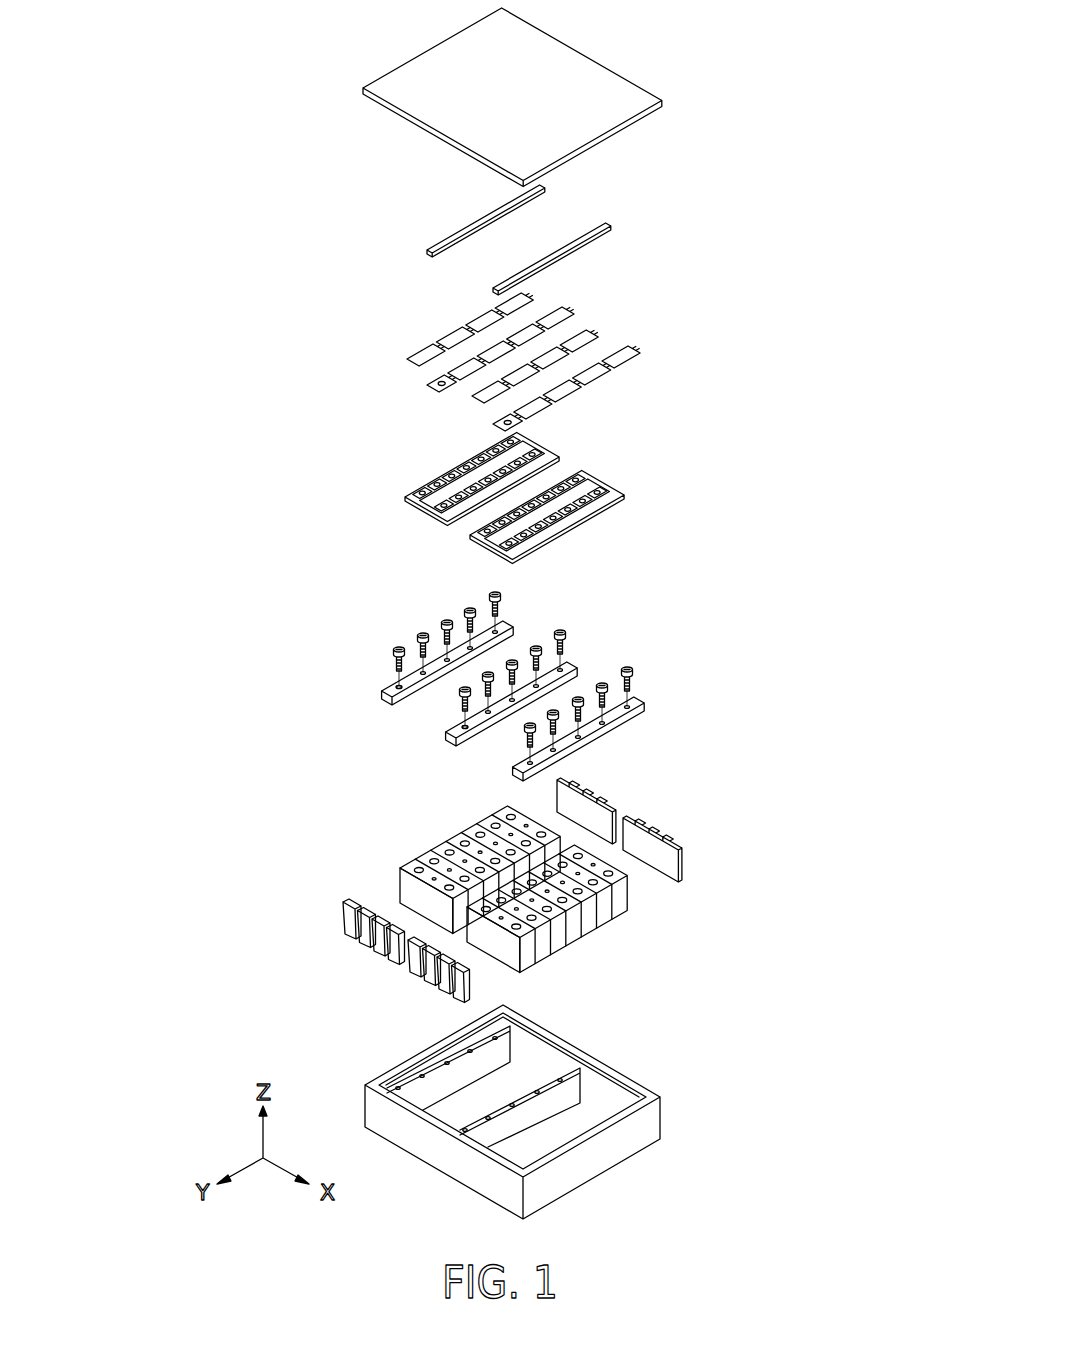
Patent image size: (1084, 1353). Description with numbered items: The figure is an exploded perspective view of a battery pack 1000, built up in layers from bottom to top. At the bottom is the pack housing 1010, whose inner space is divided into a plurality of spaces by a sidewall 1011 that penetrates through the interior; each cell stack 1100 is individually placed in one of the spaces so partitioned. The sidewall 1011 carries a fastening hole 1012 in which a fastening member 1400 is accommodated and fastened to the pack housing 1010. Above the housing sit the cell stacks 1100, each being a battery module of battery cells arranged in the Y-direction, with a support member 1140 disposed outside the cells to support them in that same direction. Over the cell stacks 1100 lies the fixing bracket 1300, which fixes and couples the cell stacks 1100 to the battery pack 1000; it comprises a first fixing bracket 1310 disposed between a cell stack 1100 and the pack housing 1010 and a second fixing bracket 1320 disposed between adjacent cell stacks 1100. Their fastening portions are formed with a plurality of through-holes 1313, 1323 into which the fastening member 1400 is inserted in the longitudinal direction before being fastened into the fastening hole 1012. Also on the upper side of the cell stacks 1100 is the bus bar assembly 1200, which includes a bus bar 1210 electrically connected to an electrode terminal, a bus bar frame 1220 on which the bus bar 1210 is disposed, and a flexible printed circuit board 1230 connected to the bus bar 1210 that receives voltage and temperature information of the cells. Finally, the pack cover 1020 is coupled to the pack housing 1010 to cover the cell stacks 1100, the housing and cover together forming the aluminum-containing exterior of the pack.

The battery pack 1000 is at (294, 31).
The pack housing 1010 is at (550, 1108).
The sidewall 1011 is at (406, 1085).
The fastening hole 1012 is at (562, 1070).
The pack cover 1020 is at (610, 85).
The cell stack 1100 is at (421, 851).
The support member 1140 is at (680, 853).
The bus bar assembly 1200 is at (557, 374).
The bus bar 1210 is at (406, 357).
The bus bar frame 1220 is at (560, 498).
The flexible printed circuit board 1230 is at (590, 247).
The fixing bracket 1300 is at (542, 686).
The first fixing bracket 1310 is at (627, 723).
The through-hole 1313 is at (393, 688).
The second fixing bracket 1320 is at (575, 664).
The through-hole 1323 is at (458, 723).
The fastening member 1400 is at (392, 657).